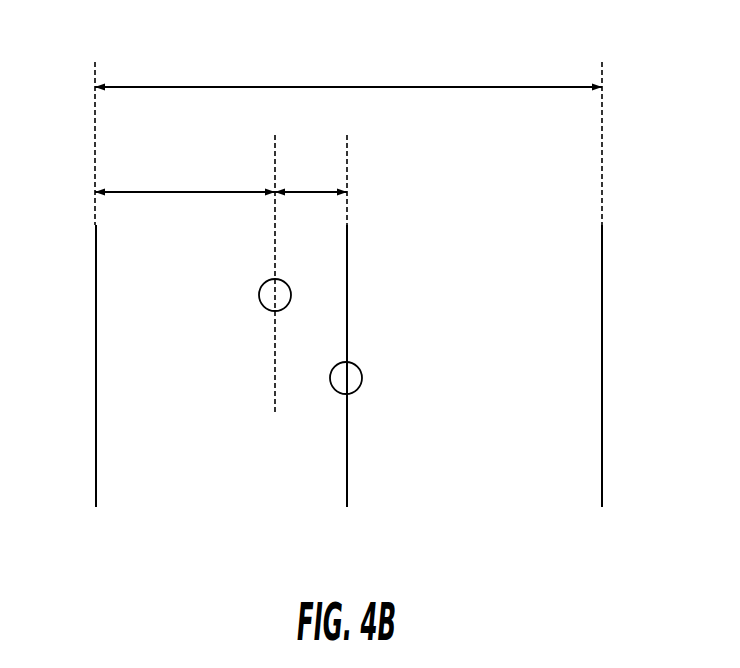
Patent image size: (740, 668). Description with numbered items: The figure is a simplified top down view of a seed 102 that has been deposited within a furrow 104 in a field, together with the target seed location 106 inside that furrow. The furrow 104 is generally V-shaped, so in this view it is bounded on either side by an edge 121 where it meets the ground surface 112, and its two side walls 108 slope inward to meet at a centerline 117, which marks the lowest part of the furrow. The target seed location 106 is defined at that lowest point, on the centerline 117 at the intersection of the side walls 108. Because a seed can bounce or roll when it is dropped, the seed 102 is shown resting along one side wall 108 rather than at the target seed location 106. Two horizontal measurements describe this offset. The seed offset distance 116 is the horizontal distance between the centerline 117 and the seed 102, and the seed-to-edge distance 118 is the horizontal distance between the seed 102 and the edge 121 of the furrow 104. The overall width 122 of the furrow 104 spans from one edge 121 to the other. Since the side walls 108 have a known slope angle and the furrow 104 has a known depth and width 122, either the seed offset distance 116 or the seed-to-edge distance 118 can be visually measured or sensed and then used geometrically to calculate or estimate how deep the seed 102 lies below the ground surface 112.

The seed 102 is at (259, 295).
The furrow 104 is at (440, 270).
The target seed location 106 is at (363, 380).
The side wall 108 is at (215, 415).
The ground surface 112 is at (47, 415).
The seed offset distance 116 is at (310, 190).
The centerline 117 is at (352, 481).
The seed-to-edge distance 118 is at (182, 192).
The edge 121 is at (93, 270).
The width 122 is at (497, 85).